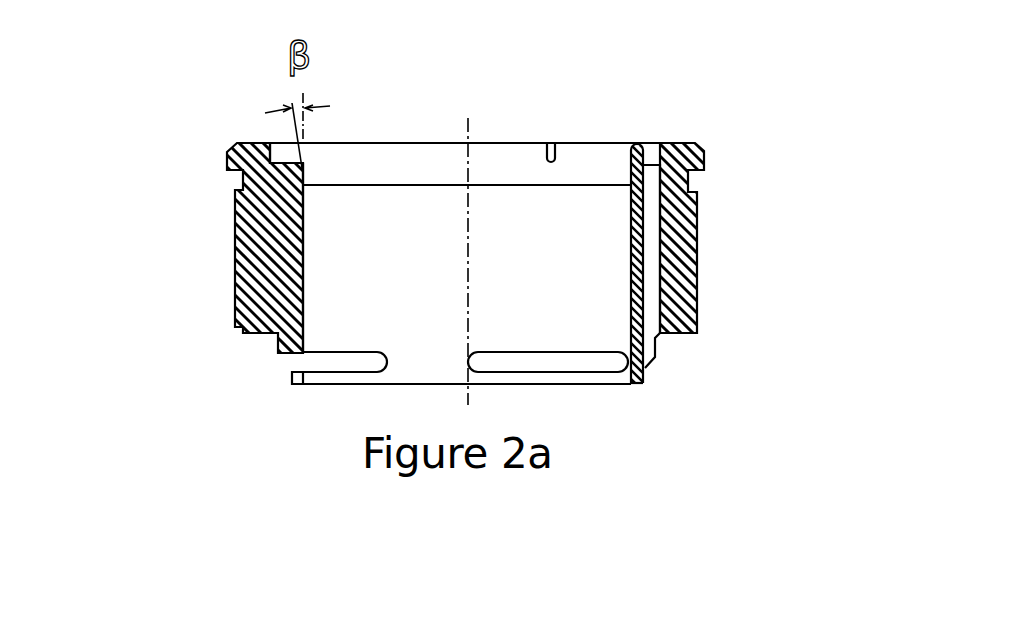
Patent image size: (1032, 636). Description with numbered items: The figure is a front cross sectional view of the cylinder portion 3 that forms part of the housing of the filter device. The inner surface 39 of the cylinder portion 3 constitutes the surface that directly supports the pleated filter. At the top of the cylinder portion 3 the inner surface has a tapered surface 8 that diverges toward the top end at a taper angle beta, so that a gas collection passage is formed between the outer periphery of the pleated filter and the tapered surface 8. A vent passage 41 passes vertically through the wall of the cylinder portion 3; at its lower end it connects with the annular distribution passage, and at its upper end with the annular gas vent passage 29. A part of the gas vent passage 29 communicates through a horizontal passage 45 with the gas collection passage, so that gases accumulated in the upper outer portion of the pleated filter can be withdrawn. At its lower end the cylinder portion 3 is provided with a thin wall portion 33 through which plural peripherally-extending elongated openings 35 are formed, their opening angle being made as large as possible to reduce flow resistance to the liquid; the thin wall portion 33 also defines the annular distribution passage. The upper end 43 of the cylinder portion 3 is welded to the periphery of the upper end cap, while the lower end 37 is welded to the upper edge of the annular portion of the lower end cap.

The cylinder portion 3 is at (235, 238).
The tapered surface 8 is at (628, 153).
The annular gas vent passage 29 is at (279, 142).
The thin wall portion 33 is at (648, 362).
The elongated openings 35 is at (318, 364).
The lower end 37 is at (673, 337).
The inner surface 39 is at (305, 258).
The vent passage 41 is at (655, 302).
The upper end 43 is at (672, 143).
The horizontal passage 45 is at (550, 143).